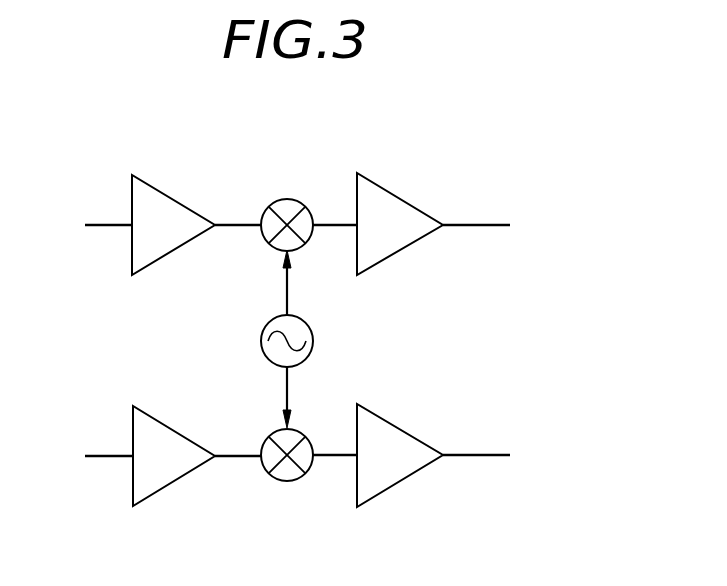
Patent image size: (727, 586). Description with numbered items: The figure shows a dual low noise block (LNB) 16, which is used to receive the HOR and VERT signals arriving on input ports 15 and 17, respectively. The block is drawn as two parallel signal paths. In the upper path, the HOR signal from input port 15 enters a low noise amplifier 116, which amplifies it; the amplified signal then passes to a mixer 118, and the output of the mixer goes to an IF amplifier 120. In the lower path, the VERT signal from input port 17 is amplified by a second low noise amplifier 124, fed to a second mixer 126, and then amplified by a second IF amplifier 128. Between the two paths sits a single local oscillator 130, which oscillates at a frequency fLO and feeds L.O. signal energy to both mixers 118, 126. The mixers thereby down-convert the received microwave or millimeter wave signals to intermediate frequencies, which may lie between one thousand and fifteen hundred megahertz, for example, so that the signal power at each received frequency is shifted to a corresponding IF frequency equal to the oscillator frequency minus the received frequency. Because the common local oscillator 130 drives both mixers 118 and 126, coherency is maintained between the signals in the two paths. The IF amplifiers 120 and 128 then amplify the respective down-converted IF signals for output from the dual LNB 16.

The dual low noise block 16 is at (297, 110).
The input port 15 is at (98, 227).
The input port 17 is at (108, 457).
The low noise amplifier 116 is at (155, 190).
The mixer 118 is at (287, 199).
The IF amplifier 120 is at (388, 192).
The low noise amplifier 124 is at (157, 420).
The mixer 126 is at (283, 482).
The IF amplifier 128 is at (390, 423).
The local oscillator 130 is at (262, 338).